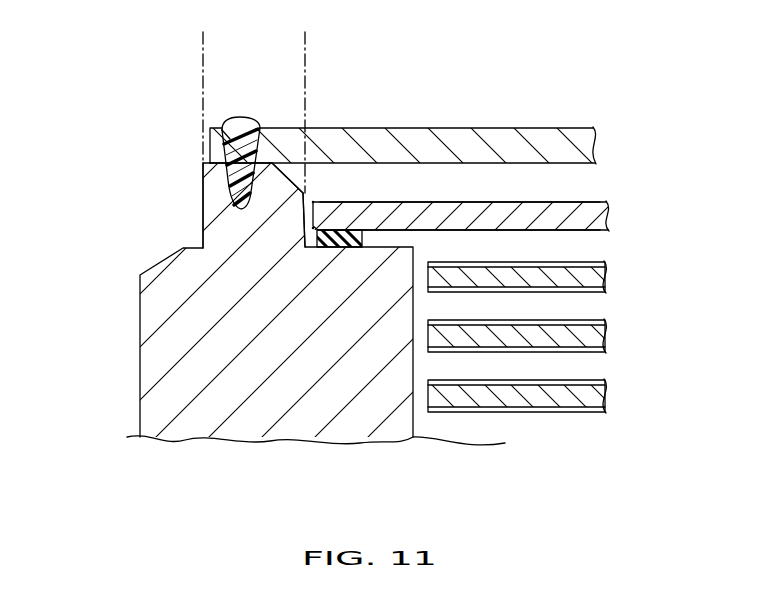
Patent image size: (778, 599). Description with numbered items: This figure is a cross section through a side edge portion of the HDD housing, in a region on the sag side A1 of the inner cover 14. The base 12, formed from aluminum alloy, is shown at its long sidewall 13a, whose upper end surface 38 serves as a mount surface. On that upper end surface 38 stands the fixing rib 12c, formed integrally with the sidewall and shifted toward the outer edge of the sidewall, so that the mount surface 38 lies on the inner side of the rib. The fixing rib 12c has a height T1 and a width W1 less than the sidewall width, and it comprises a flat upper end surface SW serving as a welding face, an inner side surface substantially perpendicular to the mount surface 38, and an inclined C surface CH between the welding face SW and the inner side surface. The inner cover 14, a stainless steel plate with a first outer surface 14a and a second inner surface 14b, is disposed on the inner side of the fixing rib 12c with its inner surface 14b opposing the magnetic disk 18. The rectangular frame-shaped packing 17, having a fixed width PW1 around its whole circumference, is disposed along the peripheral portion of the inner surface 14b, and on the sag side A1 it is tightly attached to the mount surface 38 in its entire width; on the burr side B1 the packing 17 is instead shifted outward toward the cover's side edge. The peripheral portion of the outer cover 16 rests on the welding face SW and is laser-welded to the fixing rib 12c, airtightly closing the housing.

The base 12 is at (137, 408).
The fixing rib 12c is at (220, 222).
The long sidewall 13a is at (162, 357).
The inner cover 14 is at (610, 218).
The first surface 14a is at (593, 198).
The second surface 14b is at (594, 236).
The outer cover 16 is at (597, 150).
The packing 17 is at (350, 243).
The magnetic disk 18 is at (607, 279).
The upper end surface 38 is at (303, 237).
The upper end surface SW is at (213, 160).
The inclined surface CH is at (298, 176).
The sag side A1 is at (312, 228).
The burr side B1 is at (318, 196).
The width W1 is at (305, 43).
The height T1 is at (205, 163).
The fixed width PW1 is at (363, 230).